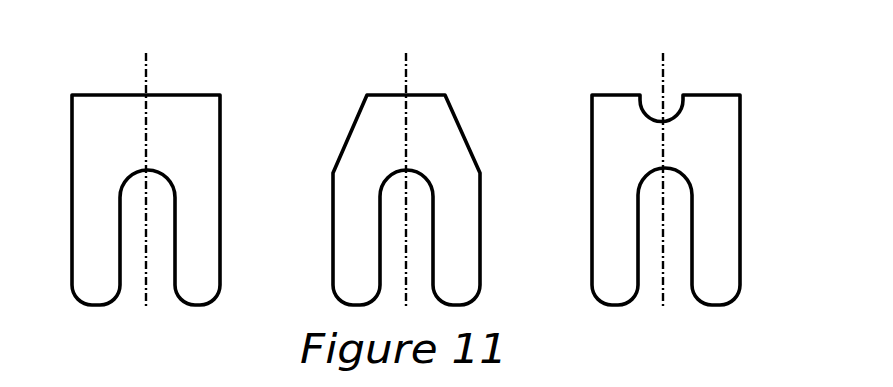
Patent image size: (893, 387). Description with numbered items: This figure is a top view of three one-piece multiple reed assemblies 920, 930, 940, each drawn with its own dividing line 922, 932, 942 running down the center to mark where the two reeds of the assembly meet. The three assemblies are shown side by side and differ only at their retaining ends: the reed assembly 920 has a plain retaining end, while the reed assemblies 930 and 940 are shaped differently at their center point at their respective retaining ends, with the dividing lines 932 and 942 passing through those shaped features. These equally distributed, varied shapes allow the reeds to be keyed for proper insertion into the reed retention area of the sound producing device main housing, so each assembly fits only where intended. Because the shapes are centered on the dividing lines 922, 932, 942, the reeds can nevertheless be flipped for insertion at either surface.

The one-piece multiple reed assembly 920 is at (127, 146).
The dividing line 922 is at (143, 78).
The one-piece multiple reed assembly 930 is at (397, 162).
The dividing line 932 is at (402, 82).
The one-piece multiple reed assembly 940 is at (648, 147).
The dividing line 942 is at (660, 82).